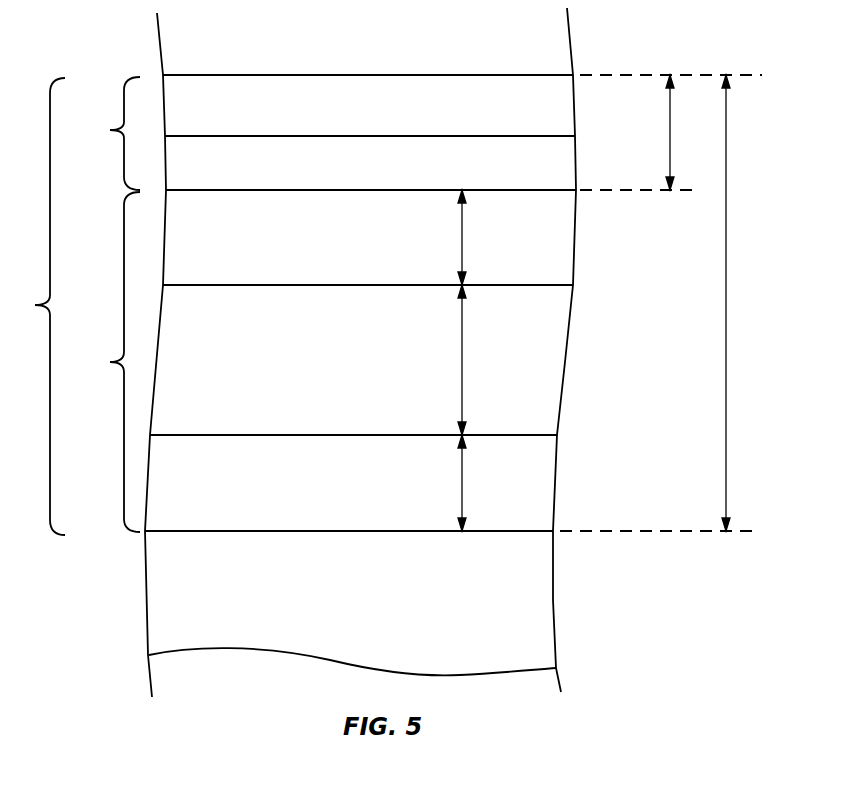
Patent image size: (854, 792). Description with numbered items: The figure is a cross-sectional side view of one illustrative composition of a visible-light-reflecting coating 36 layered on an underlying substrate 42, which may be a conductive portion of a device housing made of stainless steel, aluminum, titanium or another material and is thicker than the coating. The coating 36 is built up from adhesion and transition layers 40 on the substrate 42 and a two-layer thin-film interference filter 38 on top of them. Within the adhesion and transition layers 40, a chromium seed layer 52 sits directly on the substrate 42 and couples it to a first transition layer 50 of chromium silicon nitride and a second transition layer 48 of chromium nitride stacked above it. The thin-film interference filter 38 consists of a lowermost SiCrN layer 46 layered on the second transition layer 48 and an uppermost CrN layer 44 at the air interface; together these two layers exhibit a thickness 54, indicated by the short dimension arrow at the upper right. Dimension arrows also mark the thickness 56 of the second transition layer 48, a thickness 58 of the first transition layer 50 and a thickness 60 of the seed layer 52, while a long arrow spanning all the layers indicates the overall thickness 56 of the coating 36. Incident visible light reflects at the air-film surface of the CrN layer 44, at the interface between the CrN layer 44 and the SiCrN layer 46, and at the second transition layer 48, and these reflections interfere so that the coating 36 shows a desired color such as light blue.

The coating 36 is at (317, 305).
The thin-film interference filter 38 is at (358, 132).
The adhesion and transition layers 40 is at (352, 362).
The substrate 42 is at (160, 601).
The uppermost layer (CrN layer) 44 is at (560, 106).
The lowermost layer (SiCrN layer) 46 is at (565, 166).
The second transition layer 48 is at (560, 237).
The first transition layer 50 is at (565, 366).
The seed layer 52 is at (543, 489).
The thickness 54 is at (670, 120).
The thickness / overall thickness 56 is at (727, 259).
The thickness of CrSiN layer 58 is at (463, 348).
The thickness of Cr layer 60 is at (463, 465).